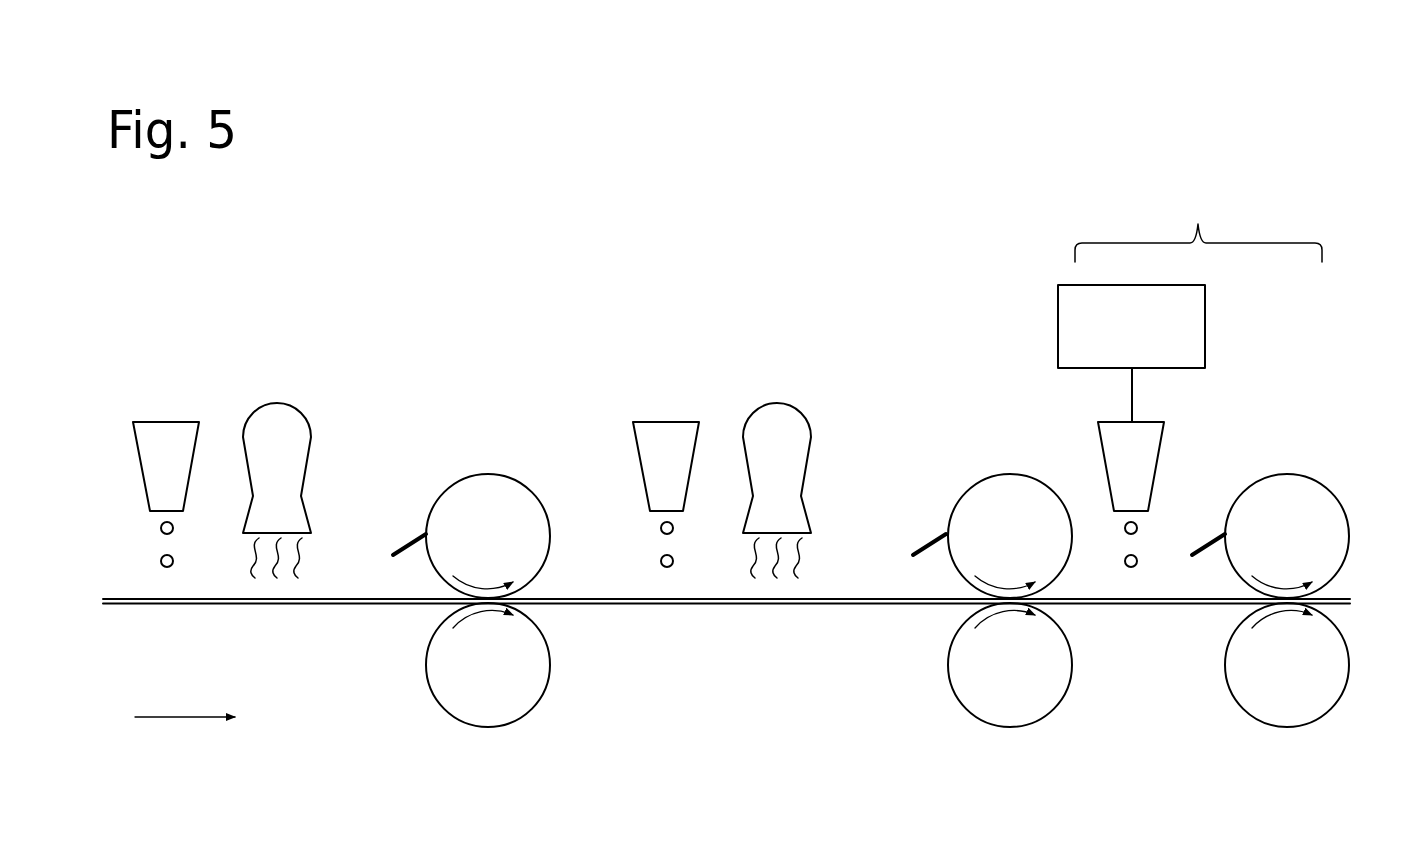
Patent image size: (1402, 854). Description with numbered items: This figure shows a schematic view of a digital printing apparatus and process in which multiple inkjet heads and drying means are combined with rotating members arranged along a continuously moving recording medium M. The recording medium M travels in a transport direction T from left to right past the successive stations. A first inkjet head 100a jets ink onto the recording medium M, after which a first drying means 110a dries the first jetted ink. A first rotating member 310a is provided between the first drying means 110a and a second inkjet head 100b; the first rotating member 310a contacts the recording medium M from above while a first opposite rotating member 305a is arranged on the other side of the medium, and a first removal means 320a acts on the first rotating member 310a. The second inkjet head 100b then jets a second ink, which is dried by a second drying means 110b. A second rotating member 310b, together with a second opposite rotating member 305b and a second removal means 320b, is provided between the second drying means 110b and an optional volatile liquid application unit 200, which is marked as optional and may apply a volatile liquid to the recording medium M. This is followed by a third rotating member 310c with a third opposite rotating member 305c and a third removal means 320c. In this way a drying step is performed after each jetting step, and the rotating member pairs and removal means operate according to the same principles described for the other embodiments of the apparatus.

The first inkjet head 100a is at (163, 438).
The first drying means 110a is at (273, 430).
The second inkjet head 100b is at (663, 438).
The second drying means 110b is at (773, 430).
The volatile liquid application unit 200 is at (1077, 417).
The first opposite rotating member 305a is at (486, 683).
The first rotating member 310a is at (485, 495).
The first removal means 320a is at (418, 540).
The second opposite rotating member 305b is at (995, 683).
The second rotating member 310b is at (995, 498).
The second removal means 320b is at (938, 540).
The third opposite rotating member 305c is at (1275, 672).
The third rotating member 310c is at (1290, 502).
The third removal means 320c is at (1220, 540).
The recording medium M is at (141, 600).
The transport direction T is at (185, 703).